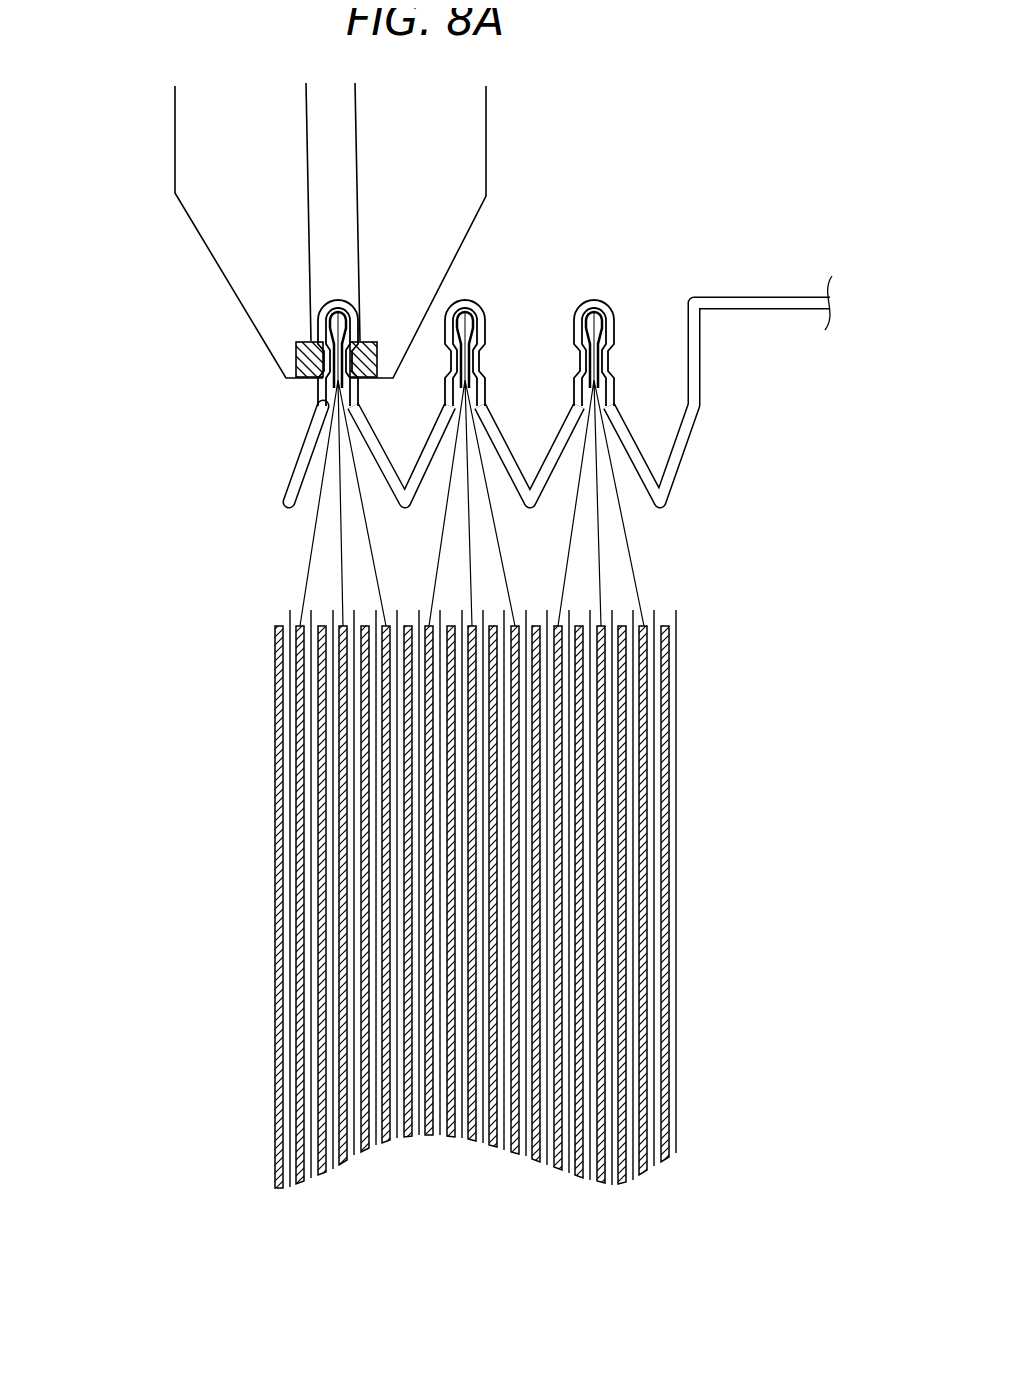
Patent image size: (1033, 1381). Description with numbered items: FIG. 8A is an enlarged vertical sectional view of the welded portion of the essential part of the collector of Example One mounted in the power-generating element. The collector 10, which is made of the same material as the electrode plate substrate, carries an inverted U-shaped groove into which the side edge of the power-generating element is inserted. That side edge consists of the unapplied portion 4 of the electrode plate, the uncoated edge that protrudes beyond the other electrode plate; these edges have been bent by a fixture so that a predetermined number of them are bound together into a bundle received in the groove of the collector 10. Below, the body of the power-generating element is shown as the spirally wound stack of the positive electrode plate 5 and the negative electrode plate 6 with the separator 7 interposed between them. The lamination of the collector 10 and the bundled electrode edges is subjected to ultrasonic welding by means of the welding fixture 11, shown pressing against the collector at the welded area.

The welding fixture 11 is at (182, 163).
The collector 10 is at (718, 292).
The unapplied portion 4 is at (630, 568).
The positive electrode plate 5 is at (647, 1160).
The negative electrode plate 6 is at (663, 1150).
The separator 7 is at (517, 959).